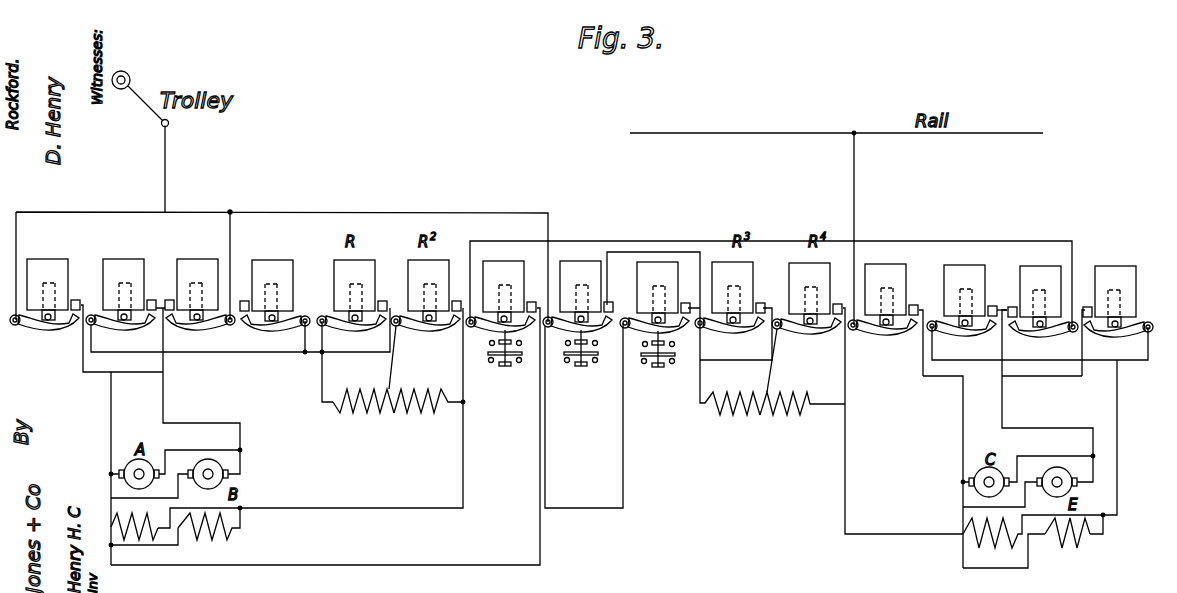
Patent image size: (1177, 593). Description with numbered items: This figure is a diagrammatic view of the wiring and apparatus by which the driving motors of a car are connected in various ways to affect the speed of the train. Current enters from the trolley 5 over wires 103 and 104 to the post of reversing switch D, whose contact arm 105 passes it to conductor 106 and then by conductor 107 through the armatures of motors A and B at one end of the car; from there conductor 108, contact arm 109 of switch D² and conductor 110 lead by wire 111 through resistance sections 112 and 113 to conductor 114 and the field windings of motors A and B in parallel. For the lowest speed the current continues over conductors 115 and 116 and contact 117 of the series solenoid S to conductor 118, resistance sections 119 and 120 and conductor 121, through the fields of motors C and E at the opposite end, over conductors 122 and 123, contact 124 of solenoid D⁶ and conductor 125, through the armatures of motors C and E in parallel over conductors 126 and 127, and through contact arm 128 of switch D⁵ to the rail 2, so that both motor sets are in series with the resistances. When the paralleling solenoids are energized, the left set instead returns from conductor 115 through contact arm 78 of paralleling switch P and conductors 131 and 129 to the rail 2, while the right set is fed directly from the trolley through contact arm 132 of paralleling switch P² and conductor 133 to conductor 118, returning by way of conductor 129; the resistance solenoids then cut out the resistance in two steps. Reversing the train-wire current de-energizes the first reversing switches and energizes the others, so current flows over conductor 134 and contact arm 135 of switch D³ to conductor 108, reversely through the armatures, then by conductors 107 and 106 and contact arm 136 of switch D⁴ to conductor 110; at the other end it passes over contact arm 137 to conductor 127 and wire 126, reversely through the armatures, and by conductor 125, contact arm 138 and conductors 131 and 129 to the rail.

The rail 2 is at (798, 131).
The trolley 5 is at (140, 94).
The contact arm of paralleling switch P 78 is at (545, 336).
The wire 103 is at (165, 183).
The wire 104 is at (86, 212).
The contact arm of switch D 105 is at (62, 333).
The conductor 106 is at (83, 373).
The conductor 107 is at (111, 433).
The conductor 108 is at (162, 386).
The contact arm of switch D² 109 is at (126, 328).
The conductor 110 is at (281, 358).
The wire 111 is at (322, 392).
The resistance section 112 is at (362, 413).
The resistance section 113 is at (425, 413).
The conductor 114 is at (462, 484).
The conductor 115 is at (550, 487).
The conductor 116 is at (577, 520).
The contact of series solenoid S 117 is at (680, 333).
The conductor 118 is at (702, 387).
The resistance section 119 is at (745, 418).
The resistance section 120 is at (782, 418).
The conductor 121 is at (846, 487).
The conductor 122 is at (1118, 420).
The conductor 123 is at (1040, 352).
The contact of solenoid D⁶ 124 is at (965, 330).
The conductor 125 is at (1002, 404).
The conductor 126 is at (962, 410).
The conductor 127 is at (922, 357).
The contact arm of reversing switch D⁵ 128 is at (897, 330).
The conductor 129 is at (862, 222).
The conductor 131 is at (659, 242).
The contact arm of paralleling switch P² 132 is at (612, 318).
The conductor 133 is at (702, 252).
The conductor 134 is at (233, 258).
The contact arm of switch D³ 135 is at (210, 328).
The contact arm of switch D⁴ 136 is at (268, 330).
The contact arm 137 is at (1123, 330).
The contact arm 138 is at (1040, 330).